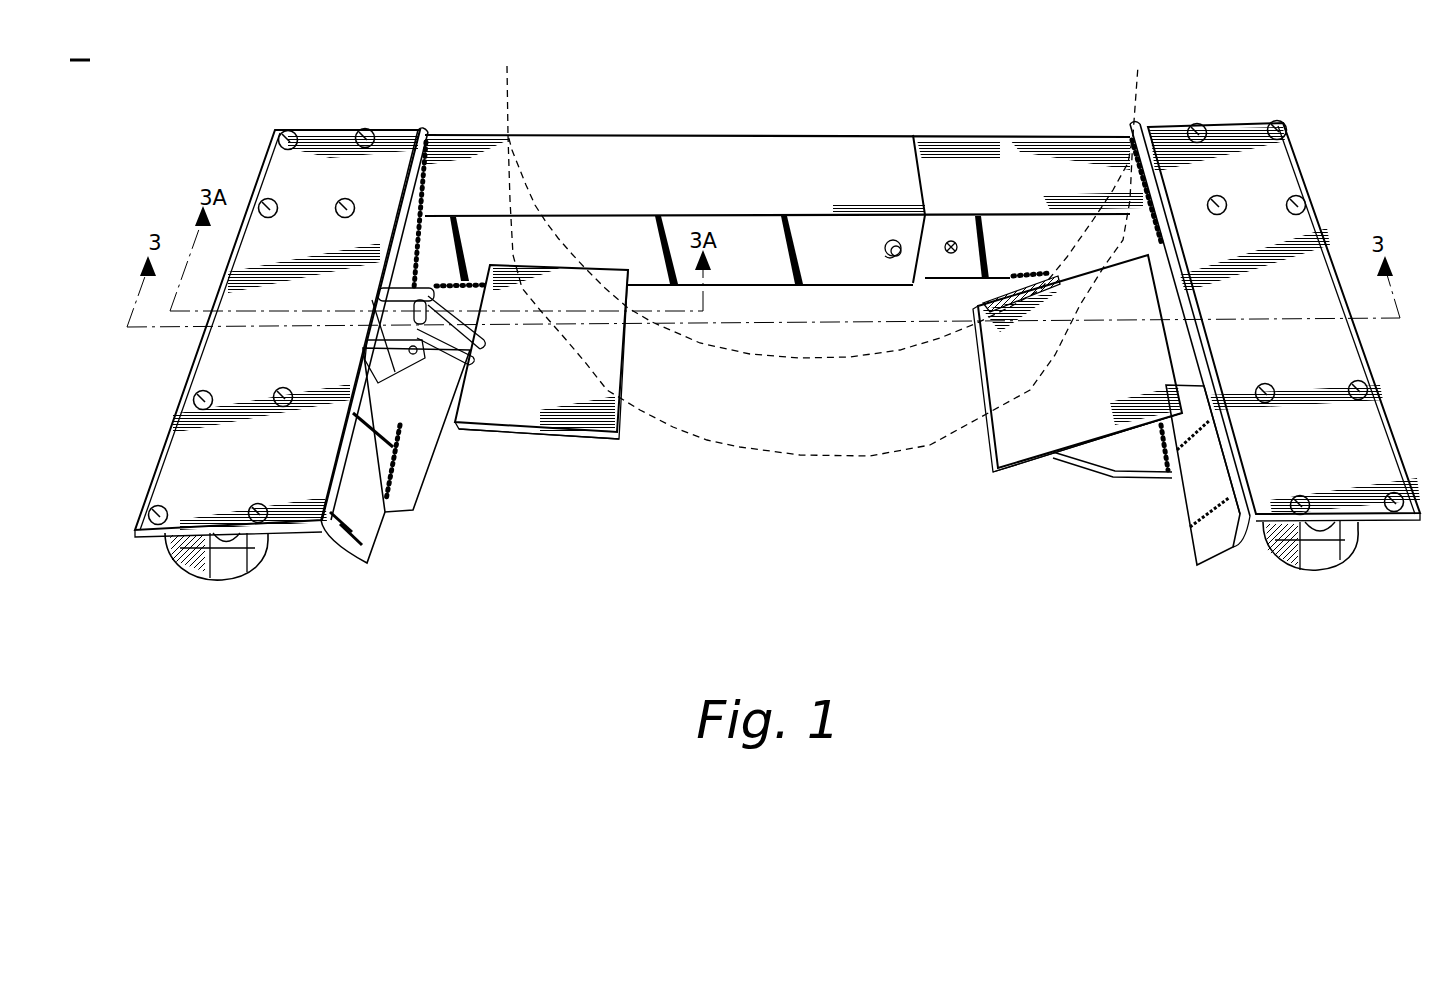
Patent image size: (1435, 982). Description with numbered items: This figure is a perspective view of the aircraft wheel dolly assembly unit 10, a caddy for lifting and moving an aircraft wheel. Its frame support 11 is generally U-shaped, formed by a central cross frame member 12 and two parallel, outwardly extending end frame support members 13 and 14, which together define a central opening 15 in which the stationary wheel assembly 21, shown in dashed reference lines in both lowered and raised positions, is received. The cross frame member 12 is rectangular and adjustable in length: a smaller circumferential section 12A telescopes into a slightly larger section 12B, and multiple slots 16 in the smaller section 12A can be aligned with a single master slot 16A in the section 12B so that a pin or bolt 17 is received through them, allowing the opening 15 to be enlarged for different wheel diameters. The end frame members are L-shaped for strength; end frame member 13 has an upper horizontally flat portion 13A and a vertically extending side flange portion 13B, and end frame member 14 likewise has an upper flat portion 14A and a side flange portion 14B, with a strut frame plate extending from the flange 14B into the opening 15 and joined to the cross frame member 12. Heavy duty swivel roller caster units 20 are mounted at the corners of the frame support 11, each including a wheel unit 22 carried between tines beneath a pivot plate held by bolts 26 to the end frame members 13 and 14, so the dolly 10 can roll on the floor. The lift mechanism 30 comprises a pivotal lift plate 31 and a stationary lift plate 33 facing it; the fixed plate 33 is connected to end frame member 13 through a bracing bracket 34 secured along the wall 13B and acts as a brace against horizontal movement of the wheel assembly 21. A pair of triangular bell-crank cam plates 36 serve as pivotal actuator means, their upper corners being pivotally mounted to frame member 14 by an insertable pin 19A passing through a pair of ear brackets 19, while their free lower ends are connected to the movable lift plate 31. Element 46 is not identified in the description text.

The aircraft wheel dolly assembly unit 10 is at (531, 101).
The frame support 11 is at (632, 155).
The cross frame member 12 is at (713, 172).
The smaller circumferential section 12A is at (1053, 163).
The larger circumferential section 12B is at (858, 153).
The end frame support member 13 is at (1233, 140).
The upper horizontally flat-like portion 13A is at (1268, 354).
The side flange portion 13B is at (1190, 485).
The end frame support member 14 is at (432, 150).
The upper horizontally flat-like portion 14A is at (253, 361).
The side flange portion 14B is at (420, 488).
The central opening 15 is at (798, 316).
The slots 16 is at (950, 238).
The master slot 16A is at (885, 252).
The pin or bolt 17 is at (882, 256).
The ear brackets 19 is at (377, 300).
The insertable pin 19A is at (406, 288).
The roller caster units 20 is at (183, 577).
The wheel assembly 21 is at (855, 340).
The wheel unit 22 is at (257, 548).
The bolts 26 is at (360, 150).
The lift mechanism 30 is at (590, 455).
The lift plate 31 is at (505, 412).
The lift plate 33 is at (1008, 440).
The bracing bracket 34 is at (1010, 284).
The cam plate members 36 is at (478, 350).
The spring chain 46 is at (412, 195).